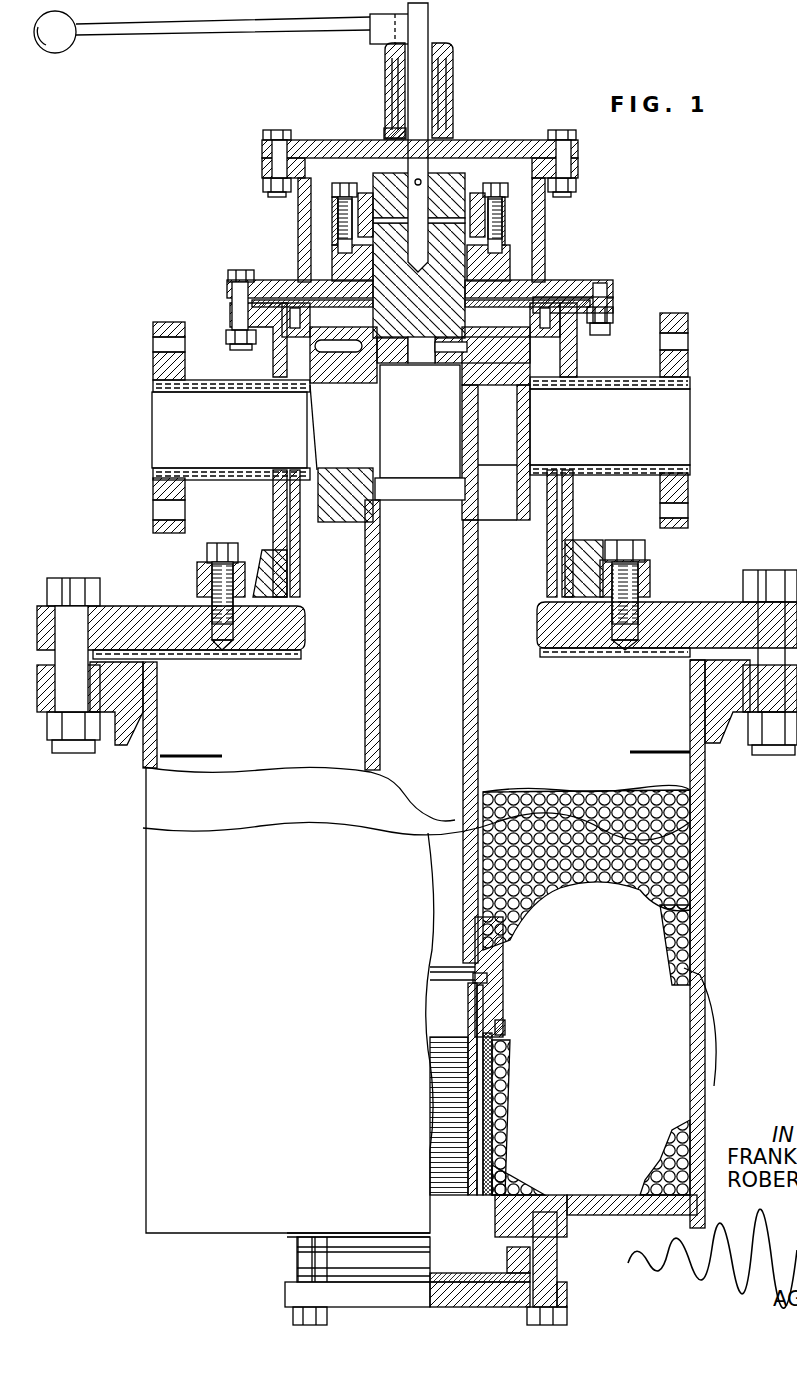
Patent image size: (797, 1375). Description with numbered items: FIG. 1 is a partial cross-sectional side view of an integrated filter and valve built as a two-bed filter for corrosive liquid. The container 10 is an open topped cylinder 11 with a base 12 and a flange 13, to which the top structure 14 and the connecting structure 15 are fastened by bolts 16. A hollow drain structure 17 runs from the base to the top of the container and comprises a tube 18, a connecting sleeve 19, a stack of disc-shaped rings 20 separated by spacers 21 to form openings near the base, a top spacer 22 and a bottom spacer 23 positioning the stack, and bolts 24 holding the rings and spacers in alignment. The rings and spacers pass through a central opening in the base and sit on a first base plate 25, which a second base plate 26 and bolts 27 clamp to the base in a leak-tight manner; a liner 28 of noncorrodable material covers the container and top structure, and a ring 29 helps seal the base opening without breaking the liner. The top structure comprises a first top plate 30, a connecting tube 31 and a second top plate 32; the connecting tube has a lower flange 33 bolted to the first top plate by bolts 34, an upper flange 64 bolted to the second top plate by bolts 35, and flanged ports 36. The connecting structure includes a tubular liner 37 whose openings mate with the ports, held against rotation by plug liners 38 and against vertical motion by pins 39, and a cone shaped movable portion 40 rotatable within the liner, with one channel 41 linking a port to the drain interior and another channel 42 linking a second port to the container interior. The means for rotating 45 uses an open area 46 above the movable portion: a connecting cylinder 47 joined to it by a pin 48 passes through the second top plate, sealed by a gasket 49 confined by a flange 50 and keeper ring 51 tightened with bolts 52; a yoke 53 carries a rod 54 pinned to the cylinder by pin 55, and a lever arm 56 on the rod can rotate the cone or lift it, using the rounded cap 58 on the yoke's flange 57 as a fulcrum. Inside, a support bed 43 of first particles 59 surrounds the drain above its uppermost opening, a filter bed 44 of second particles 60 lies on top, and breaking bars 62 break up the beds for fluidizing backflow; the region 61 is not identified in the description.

The container 10 is at (705, 868).
The open topped cylinder 11 is at (706, 898).
The base 12 is at (583, 1197).
The flange 13 is at (128, 730).
The top structure 14 is at (620, 368).
The connecting structure 15 is at (348, 443).
The bolts 16 is at (78, 580).
The drain structure 17 is at (505, 967).
The tube 18 is at (365, 705).
The connecting sleeve 19 is at (505, 983).
The disc-shaped rings 20 is at (480, 1072).
The spacers 21 is at (490, 1108).
The top spacer 22 is at (505, 1027).
The bottom spacer 23 is at (470, 1210).
The bolts 24 is at (500, 1003).
The first base plate 25 is at (455, 1271).
The second base plate 26 is at (285, 1293).
The bolts 27 is at (290, 1316).
The liner 28 is at (478, 1242).
The ring 29 is at (531, 1260).
The first top plate 30 is at (664, 605).
The connecting tube 31 is at (574, 498).
The second top plate 32 is at (556, 285).
The lower flange 33 is at (582, 550).
The bolts 34 is at (630, 548).
The bolts 35 is at (244, 272).
The ports 36 is at (176, 441).
The tubular liner 37 is at (547, 568).
The plug liners 38 is at (237, 470).
The pins 39 is at (278, 330).
The movable portion 40 is at (352, 522).
The channel 41 is at (390, 424).
The channel 42 is at (503, 421).
The support bed 43 is at (595, 1114).
The filter bed 44 is at (600, 833).
The means for rotating the connecting structure 45 is at (548, 220).
The open area 46 is at (421, 318).
The connecting cylinder 47 is at (434, 326).
The pin 48 is at (320, 372).
The gasket 49 is at (360, 258).
The flange 50 is at (500, 272).
The keeper ring 51 is at (502, 208).
The bolts 52 is at (506, 189).
The yoke 53 is at (262, 160).
The rod 54 is at (423, 98).
The pin 55 is at (398, 225).
The lever arm 56 is at (140, 33).
The flange 57 is at (388, 133).
The rounded cap 58 is at (448, 44).
The first particles 59 is at (710, 1030).
The second particles 60 is at (692, 789).
The upper chamber 61 is at (555, 716).
The breaking bars 62 is at (197, 754).
The upper flange 64 is at (230, 320).